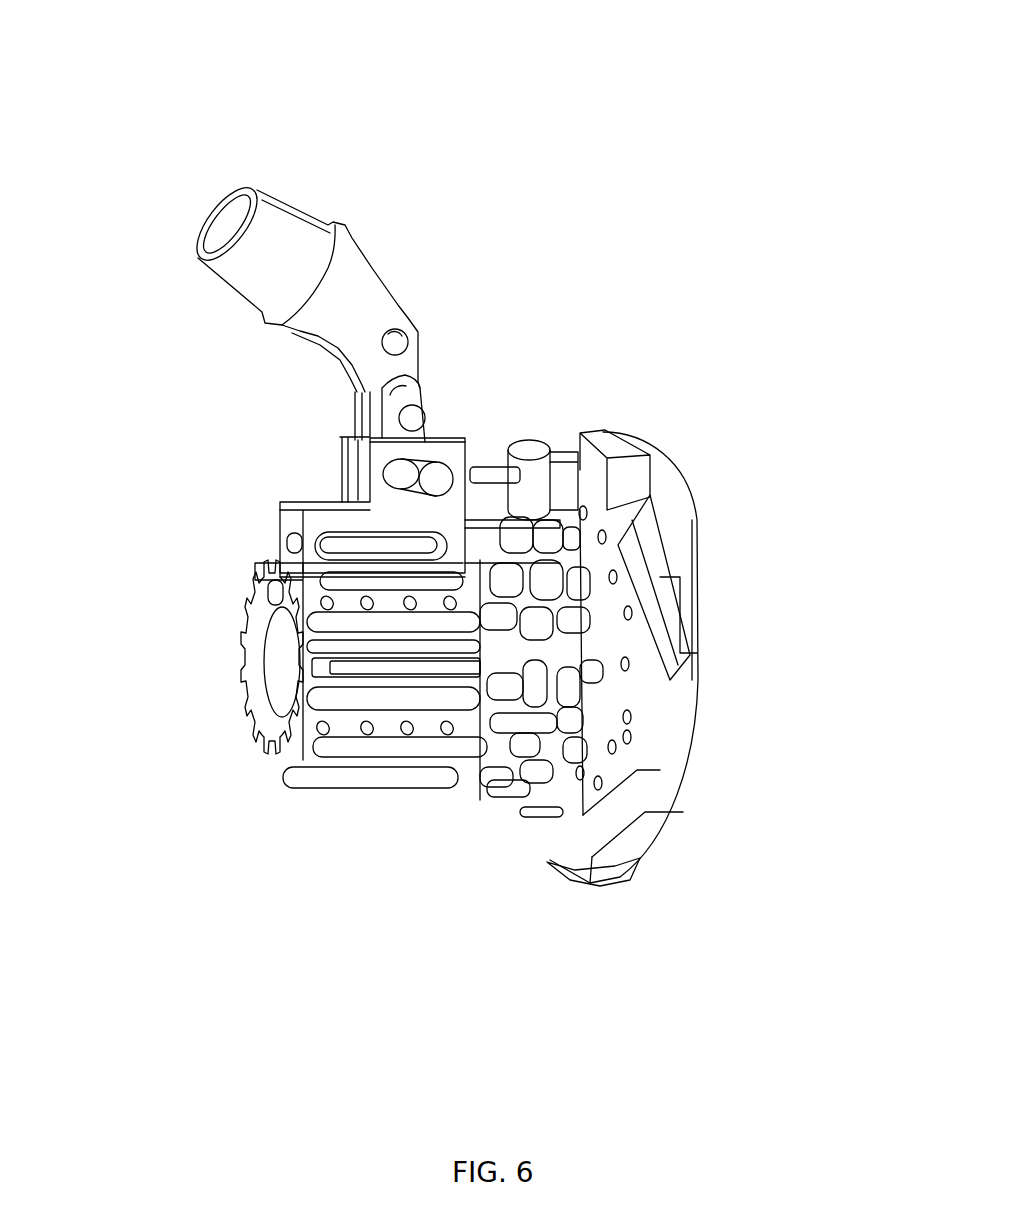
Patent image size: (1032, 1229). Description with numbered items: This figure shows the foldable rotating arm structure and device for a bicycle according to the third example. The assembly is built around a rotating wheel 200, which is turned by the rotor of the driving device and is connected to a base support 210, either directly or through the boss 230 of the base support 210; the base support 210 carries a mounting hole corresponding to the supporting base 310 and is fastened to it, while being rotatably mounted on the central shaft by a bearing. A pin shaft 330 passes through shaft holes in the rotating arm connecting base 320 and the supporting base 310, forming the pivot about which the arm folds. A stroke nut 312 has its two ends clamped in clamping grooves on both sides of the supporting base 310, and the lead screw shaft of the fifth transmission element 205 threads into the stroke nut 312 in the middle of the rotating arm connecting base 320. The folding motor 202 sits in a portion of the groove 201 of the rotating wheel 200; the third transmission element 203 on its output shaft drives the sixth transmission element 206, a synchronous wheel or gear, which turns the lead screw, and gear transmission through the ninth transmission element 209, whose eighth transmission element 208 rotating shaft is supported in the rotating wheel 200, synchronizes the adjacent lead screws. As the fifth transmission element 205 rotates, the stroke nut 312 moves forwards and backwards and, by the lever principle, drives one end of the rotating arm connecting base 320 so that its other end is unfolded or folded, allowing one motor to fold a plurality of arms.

The rotating wheel 200 is at (673, 537).
The groove 201 is at (672, 605).
The folding motor 202 is at (575, 463).
The third transmission element 203 is at (518, 460).
The fifth transmission element 205 is at (513, 520).
The sixth transmission element 206 is at (425, 545).
The eighth transmission element 208 is at (520, 537).
The ninth transmission element 209 is at (547, 530).
The base support 210 is at (343, 612).
The boss 230 is at (495, 620).
The supporting base 310 is at (400, 512).
The stroke nut 312 is at (402, 412).
The rotating arm connecting base 320 is at (372, 303).
The pin shaft 330 is at (430, 473).